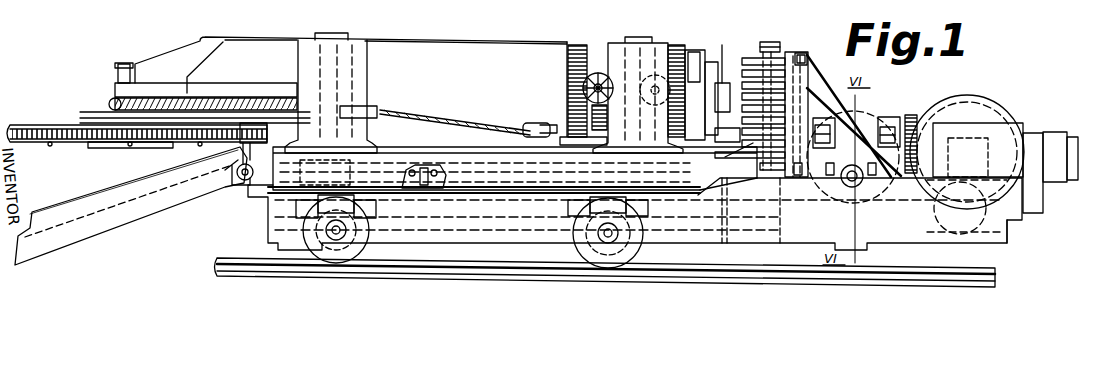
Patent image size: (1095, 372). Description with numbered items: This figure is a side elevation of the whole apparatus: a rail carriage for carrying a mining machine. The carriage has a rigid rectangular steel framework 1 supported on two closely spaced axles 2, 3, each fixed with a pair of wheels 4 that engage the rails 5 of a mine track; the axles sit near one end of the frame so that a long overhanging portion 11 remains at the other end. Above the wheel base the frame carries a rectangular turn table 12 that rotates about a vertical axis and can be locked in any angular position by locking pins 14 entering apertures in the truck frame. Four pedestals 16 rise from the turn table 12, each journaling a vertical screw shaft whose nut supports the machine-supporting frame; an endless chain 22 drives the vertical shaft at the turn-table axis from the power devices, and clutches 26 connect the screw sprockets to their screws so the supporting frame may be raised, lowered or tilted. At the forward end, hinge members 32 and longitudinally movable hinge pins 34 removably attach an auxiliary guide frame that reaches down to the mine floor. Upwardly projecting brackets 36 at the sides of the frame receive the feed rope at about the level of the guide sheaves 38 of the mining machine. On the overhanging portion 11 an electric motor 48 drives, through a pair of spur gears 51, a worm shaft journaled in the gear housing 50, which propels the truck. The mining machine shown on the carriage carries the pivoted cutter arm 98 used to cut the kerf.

The framework 1 is at (525, 235).
The axle 2 is at (312, 265).
The axle 3 is at (597, 266).
The wheels 4 is at (370, 267).
The rails 5 is at (708, 273).
The overhanging portion 11 is at (1010, 237).
The turn table 12 is at (523, 157).
The locking pins 14 is at (422, 168).
The pedestals 16 is at (358, 78).
The endless chain 22 is at (498, 218).
The clutches 26 is at (432, 125).
The hinge members 32 is at (243, 184).
The hinge pins 34 is at (240, 178).
The brackets 36 is at (778, 44).
The guide sheaves 38 is at (686, 133).
The electric motor 48 is at (1012, 138).
The gear housing 50 is at (885, 117).
The spur gears 51 is at (908, 115).
The cutter arm 98 is at (62, 124).